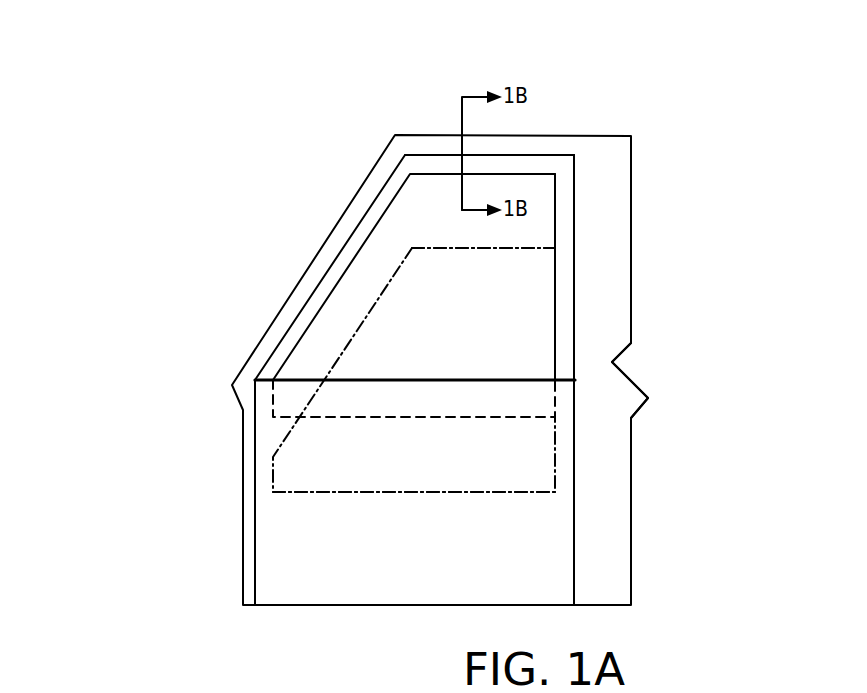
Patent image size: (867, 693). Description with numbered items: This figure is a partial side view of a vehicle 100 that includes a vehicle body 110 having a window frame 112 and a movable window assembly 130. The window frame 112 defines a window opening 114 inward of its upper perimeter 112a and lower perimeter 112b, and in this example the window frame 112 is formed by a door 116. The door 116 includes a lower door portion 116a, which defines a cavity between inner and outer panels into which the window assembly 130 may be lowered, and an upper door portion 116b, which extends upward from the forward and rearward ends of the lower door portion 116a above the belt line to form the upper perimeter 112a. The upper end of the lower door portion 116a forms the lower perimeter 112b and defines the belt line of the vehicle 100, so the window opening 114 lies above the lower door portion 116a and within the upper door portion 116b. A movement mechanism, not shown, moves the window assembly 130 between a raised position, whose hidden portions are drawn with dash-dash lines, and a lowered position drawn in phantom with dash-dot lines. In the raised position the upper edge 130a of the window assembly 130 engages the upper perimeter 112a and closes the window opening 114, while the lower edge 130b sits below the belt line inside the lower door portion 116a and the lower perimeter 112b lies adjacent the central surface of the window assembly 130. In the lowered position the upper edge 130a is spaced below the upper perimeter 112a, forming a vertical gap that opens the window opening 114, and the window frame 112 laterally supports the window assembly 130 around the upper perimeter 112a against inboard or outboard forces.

The vehicle 100 is at (188, 176).
The vehicle body 110 is at (237, 386).
The window frame 112 is at (310, 283).
The upper perimeter 112a is at (553, 172).
The lower perimeter 112b is at (477, 382).
The window opening 114 is at (538, 228).
The door 116 is at (583, 392).
The lower door portion 116a is at (575, 528).
The upper door portion 116b is at (575, 302).
The window assembly 130 is at (540, 279).
The upper edge 130a is at (423, 247).
The lower edge 130b is at (383, 492).